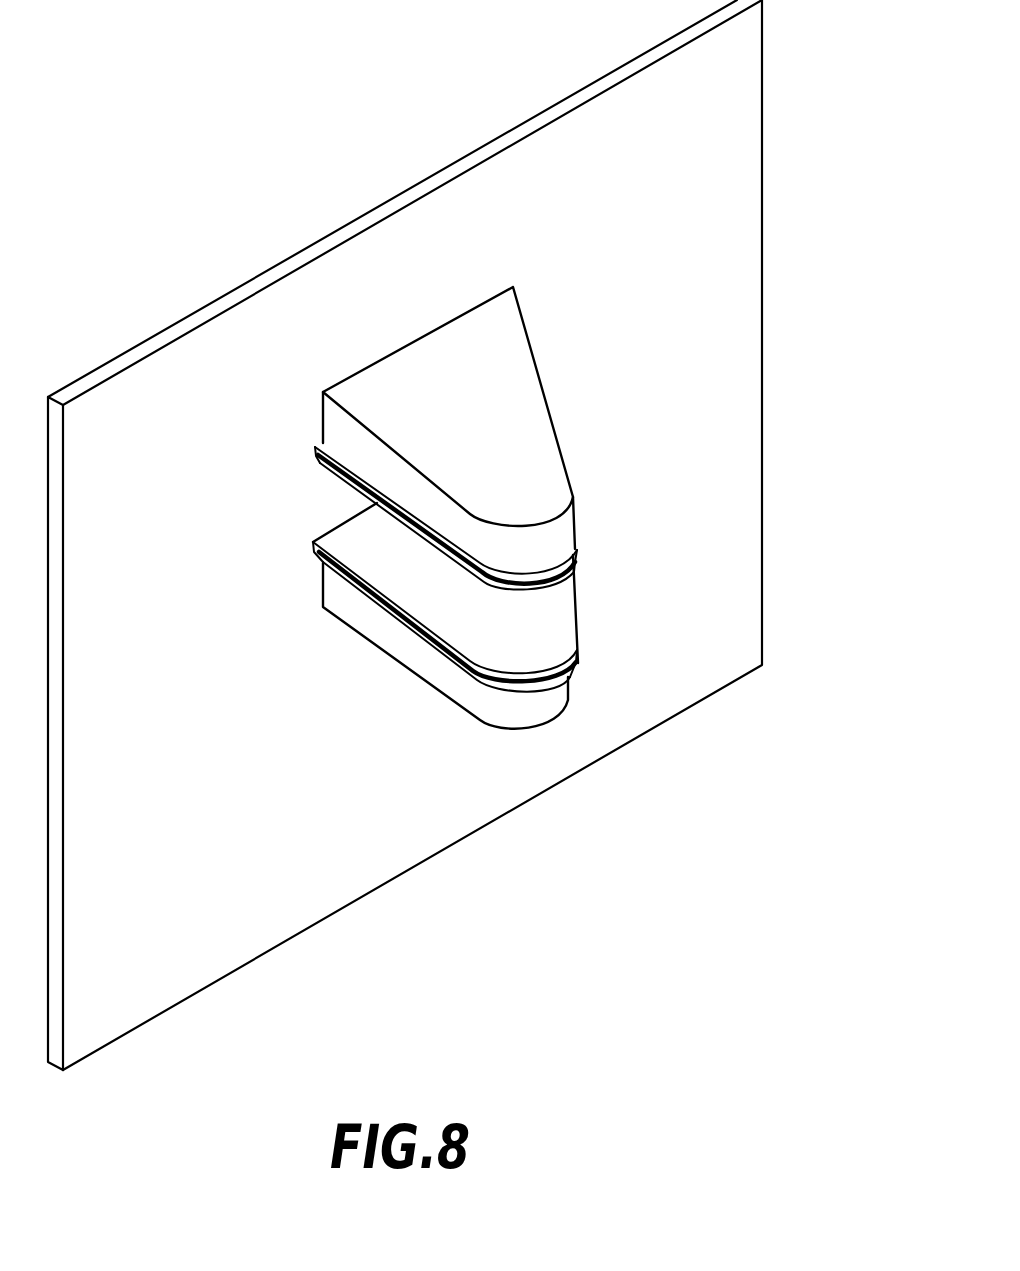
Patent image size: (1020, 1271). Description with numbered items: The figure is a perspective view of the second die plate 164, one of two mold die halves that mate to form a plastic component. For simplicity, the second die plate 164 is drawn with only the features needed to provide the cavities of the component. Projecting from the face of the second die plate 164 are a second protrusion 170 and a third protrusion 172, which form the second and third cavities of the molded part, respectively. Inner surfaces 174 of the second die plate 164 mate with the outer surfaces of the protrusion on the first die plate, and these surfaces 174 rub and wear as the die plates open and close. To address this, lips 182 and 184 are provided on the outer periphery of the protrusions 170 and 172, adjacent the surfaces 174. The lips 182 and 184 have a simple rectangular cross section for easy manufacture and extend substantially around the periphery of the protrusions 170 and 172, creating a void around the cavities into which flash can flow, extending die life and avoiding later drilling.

The second die plate 164 is at (738, 110).
The second protrusion 170 is at (581, 372).
The third protrusion 172 is at (600, 594).
The inner surfaces 174 is at (323, 465).
The lip 182 is at (577, 546).
The lip 184 is at (578, 663).